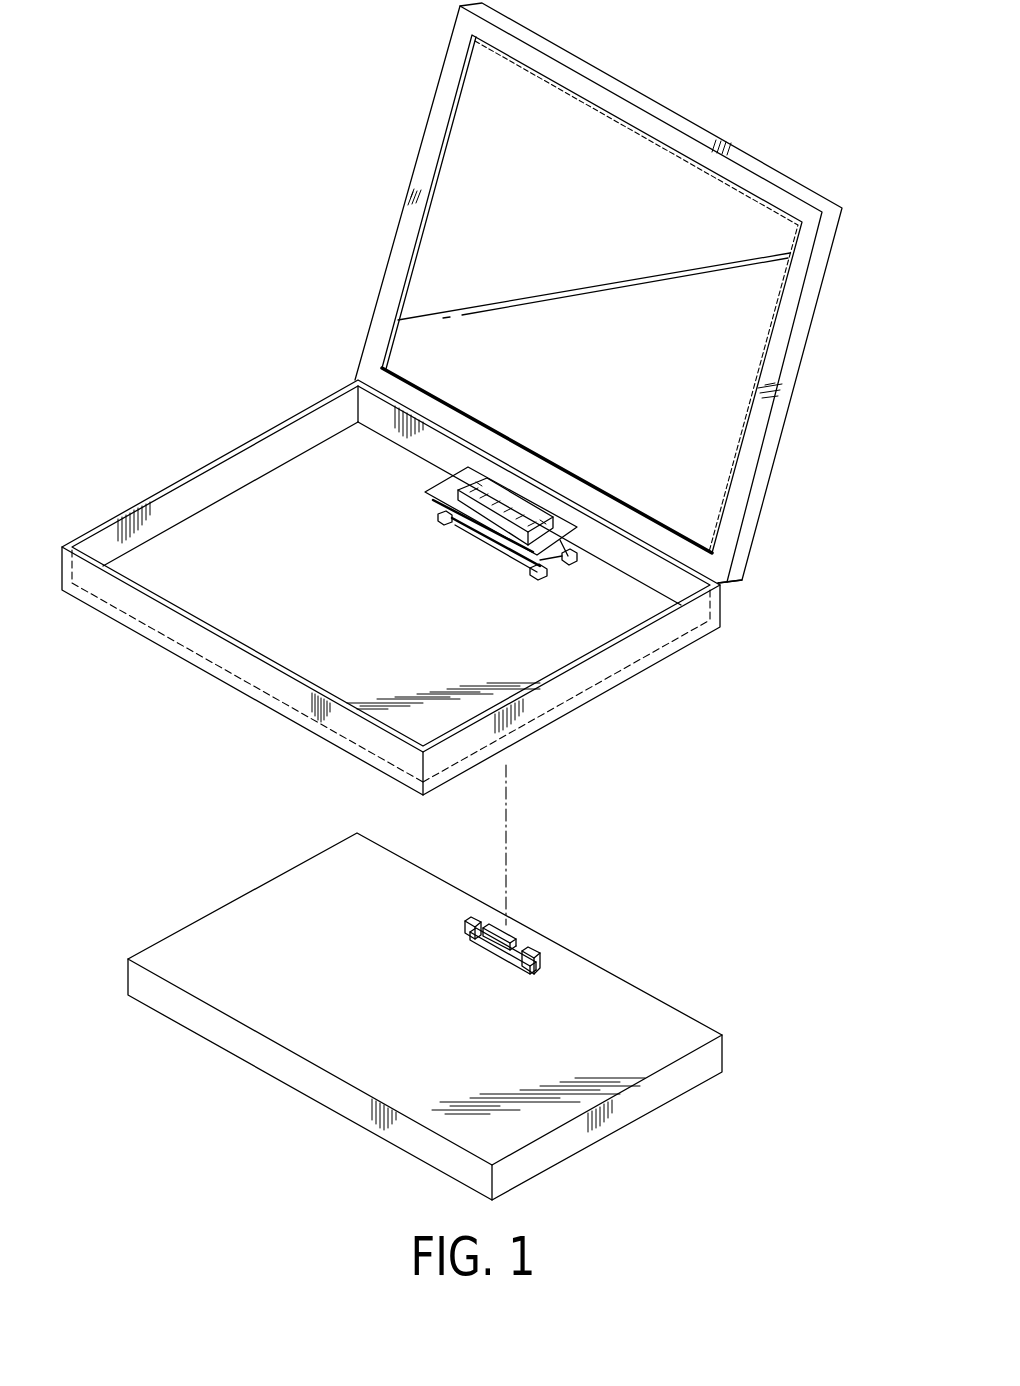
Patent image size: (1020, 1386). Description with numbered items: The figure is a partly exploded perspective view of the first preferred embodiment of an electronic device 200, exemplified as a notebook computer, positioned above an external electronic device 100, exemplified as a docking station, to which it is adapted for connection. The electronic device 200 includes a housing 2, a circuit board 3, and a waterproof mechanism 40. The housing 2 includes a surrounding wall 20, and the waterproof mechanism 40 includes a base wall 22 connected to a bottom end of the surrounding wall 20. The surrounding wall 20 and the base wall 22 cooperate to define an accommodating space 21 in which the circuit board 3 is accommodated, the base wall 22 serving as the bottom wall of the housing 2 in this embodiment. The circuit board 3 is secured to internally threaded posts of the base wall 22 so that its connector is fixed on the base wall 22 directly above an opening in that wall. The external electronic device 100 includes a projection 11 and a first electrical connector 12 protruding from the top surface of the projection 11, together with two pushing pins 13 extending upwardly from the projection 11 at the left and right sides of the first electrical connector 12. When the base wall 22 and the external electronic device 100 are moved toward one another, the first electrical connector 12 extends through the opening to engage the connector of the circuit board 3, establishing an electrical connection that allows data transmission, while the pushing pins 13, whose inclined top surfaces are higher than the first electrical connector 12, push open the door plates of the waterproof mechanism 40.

The electronic device 200 is at (318, 385).
The housing 2 is at (222, 435).
The surrounding wall 20 is at (267, 455).
The accommodating space 21 is at (240, 527).
The base wall 22 is at (327, 467).
The circuit board 3 is at (573, 530).
The waterproof mechanism 40 is at (548, 583).
The external electronic device 100 is at (262, 857).
The projection 11 is at (535, 965).
The first electrical connector 12 is at (513, 937).
The pushing pins 13 is at (472, 915).